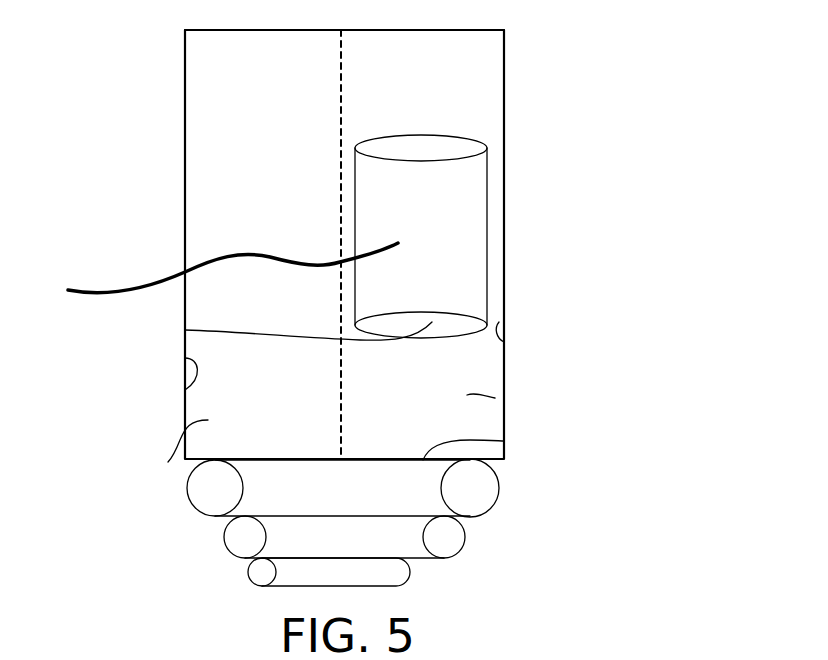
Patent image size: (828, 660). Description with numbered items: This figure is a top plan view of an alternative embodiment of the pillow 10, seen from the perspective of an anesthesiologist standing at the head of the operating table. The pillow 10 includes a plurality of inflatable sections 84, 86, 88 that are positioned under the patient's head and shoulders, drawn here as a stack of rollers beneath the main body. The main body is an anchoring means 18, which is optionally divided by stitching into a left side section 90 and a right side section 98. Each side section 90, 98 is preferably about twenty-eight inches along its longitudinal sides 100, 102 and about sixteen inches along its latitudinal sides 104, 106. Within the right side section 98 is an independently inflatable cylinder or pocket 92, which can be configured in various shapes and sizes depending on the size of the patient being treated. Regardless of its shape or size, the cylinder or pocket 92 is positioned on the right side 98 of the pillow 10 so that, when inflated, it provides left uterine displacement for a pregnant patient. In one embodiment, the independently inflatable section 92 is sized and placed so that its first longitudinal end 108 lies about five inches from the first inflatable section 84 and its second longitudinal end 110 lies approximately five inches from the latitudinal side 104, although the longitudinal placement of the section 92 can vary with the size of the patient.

The pillow 10 is at (598, 129).
The anchoring means 18 is at (185, 104).
The first inflatable section 84 is at (220, 487).
The inflatable section 86 is at (247, 547).
The inflatable section 88 is at (410, 568).
The left side section 90 is at (495, 398).
The independently inflatable cylinder or pocket 92 is at (216, 273).
The right side section 98 is at (168, 462).
The longitudinal side 100 is at (185, 358).
The longitudinal side 102 is at (504, 342).
The latitudinal side 104 is at (504, 441).
The latitudinal side 106 is at (462, 30).
The first longitudinal end 108 is at (487, 148).
The second longitudinal end 110 is at (185, 330).